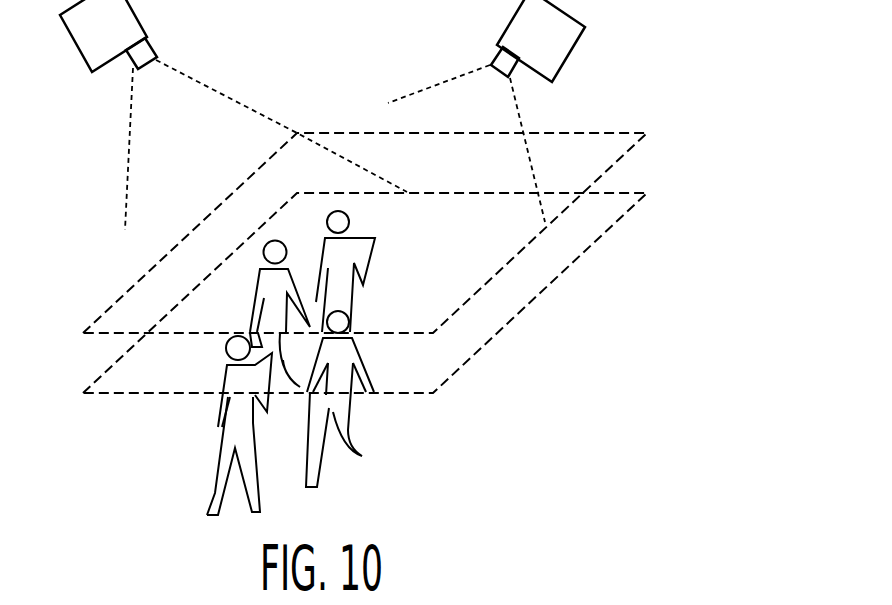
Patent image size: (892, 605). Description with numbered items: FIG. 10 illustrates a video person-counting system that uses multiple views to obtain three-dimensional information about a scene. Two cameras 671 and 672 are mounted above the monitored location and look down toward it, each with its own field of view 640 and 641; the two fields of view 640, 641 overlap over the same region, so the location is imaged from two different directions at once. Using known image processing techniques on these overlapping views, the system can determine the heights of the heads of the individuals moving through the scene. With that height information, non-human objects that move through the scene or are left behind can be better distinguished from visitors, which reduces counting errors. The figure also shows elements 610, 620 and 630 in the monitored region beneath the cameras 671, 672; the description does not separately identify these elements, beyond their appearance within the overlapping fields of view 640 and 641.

The first virtual plane 610 is at (125, 295).
The second virtual plane 620 is at (127, 393).
The people / tracked objects 630 is at (214, 488).
The field of view 640 is at (201, 156).
The field of view 641 is at (481, 118).
The camera 671 is at (122, 43).
The camera 672 is at (559, 50).